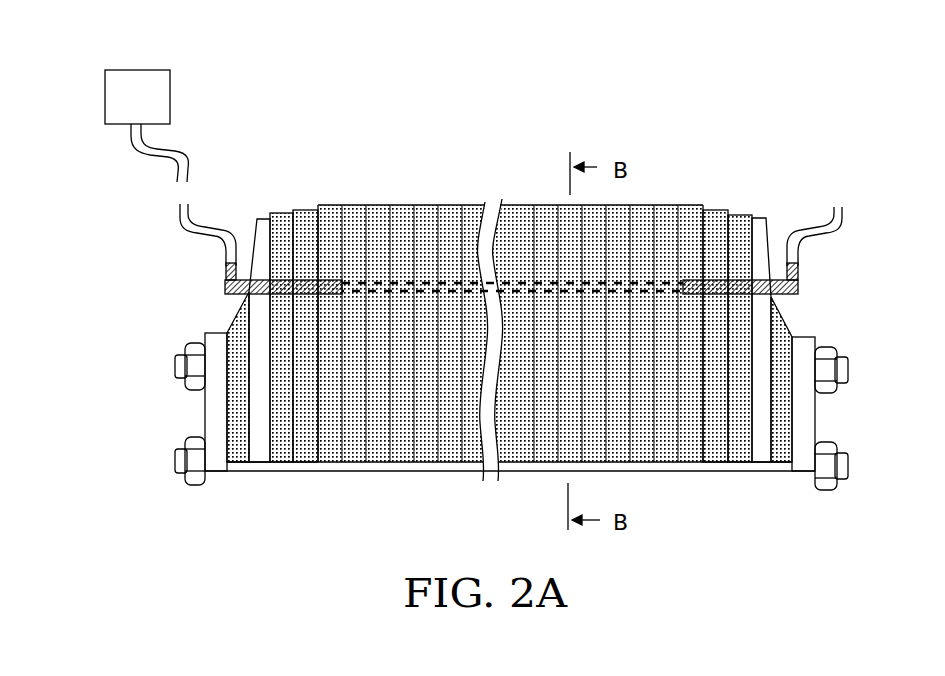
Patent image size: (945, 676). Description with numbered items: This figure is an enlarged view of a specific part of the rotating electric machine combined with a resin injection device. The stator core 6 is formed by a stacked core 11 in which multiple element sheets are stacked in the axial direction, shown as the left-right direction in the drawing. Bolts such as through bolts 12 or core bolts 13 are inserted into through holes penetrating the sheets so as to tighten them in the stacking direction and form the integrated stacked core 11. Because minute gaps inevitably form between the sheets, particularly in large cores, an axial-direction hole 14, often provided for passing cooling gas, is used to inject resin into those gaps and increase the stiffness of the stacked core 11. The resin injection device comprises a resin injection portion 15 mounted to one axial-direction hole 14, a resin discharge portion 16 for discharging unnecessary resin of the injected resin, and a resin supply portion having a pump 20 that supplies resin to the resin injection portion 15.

The stator core 6 is at (657, 207).
The stacked core 11 is at (422, 205).
The through bolt 12 is at (840, 357).
The core bolt 13 is at (840, 448).
The axial-direction hole 14 is at (558, 288).
The resin injection portion 15 is at (223, 282).
The resin discharge portion 16 is at (799, 283).
The pump 20 is at (153, 69).